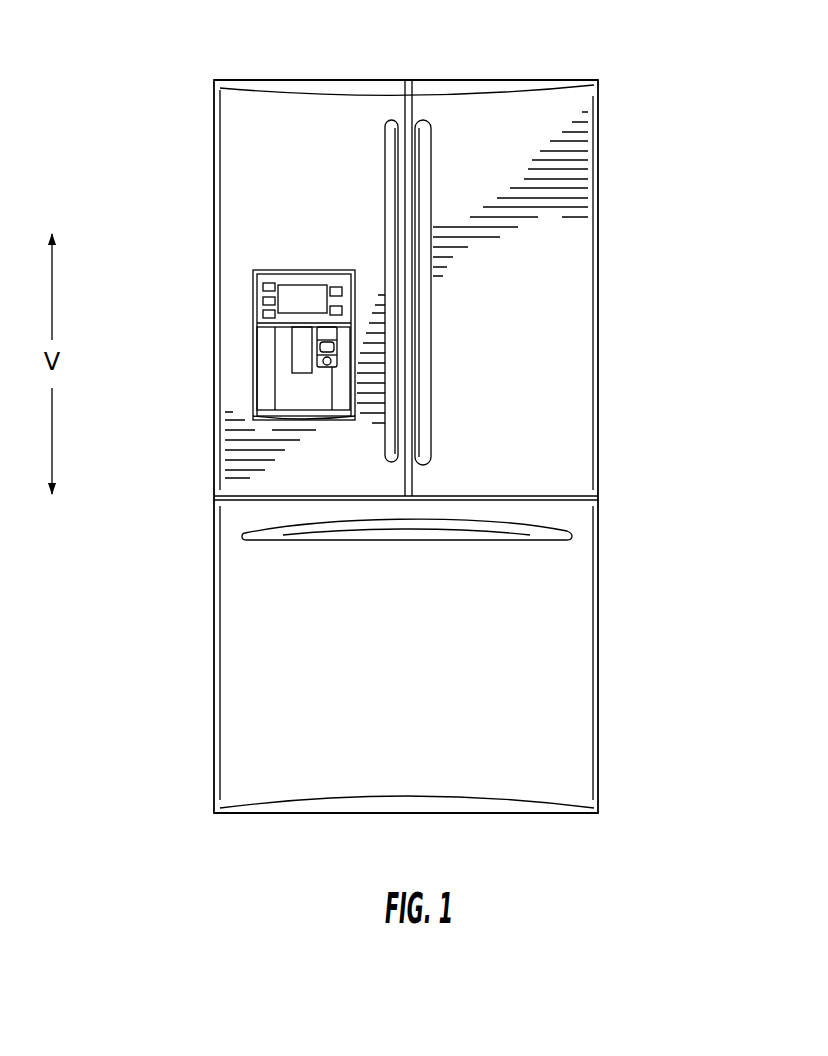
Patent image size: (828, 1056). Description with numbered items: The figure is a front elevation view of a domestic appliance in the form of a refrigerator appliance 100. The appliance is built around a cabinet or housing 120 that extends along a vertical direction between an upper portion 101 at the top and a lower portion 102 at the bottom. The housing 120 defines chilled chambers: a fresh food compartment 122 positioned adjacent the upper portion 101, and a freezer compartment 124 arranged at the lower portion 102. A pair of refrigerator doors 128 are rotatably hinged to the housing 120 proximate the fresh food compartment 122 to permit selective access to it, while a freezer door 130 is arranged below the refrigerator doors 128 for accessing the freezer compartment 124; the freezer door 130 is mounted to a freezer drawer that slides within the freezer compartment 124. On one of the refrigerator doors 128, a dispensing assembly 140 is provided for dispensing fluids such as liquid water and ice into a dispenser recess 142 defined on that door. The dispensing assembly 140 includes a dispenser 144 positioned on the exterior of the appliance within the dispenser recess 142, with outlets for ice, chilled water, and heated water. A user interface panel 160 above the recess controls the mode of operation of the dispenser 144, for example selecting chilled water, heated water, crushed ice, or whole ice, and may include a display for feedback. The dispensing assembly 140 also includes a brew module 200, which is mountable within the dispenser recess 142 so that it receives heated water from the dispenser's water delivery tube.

The refrigerator appliance 100 is at (133, 94).
The upper portion 101 is at (606, 84).
The lower portion 102 is at (607, 798).
The housing 120 is at (598, 497).
The fresh food compartment 122 is at (548, 358).
The freezer compartment 124 is at (548, 625).
The refrigerator doors 128 is at (255, 151).
The freezer door 130 is at (282, 641).
The dispensing assembly 140 is at (237, 335).
The dispenser recess 142 is at (276, 378).
The dispenser 144 is at (269, 268).
The user interface panel 160 is at (322, 280).
The brew module 200 is at (338, 356).